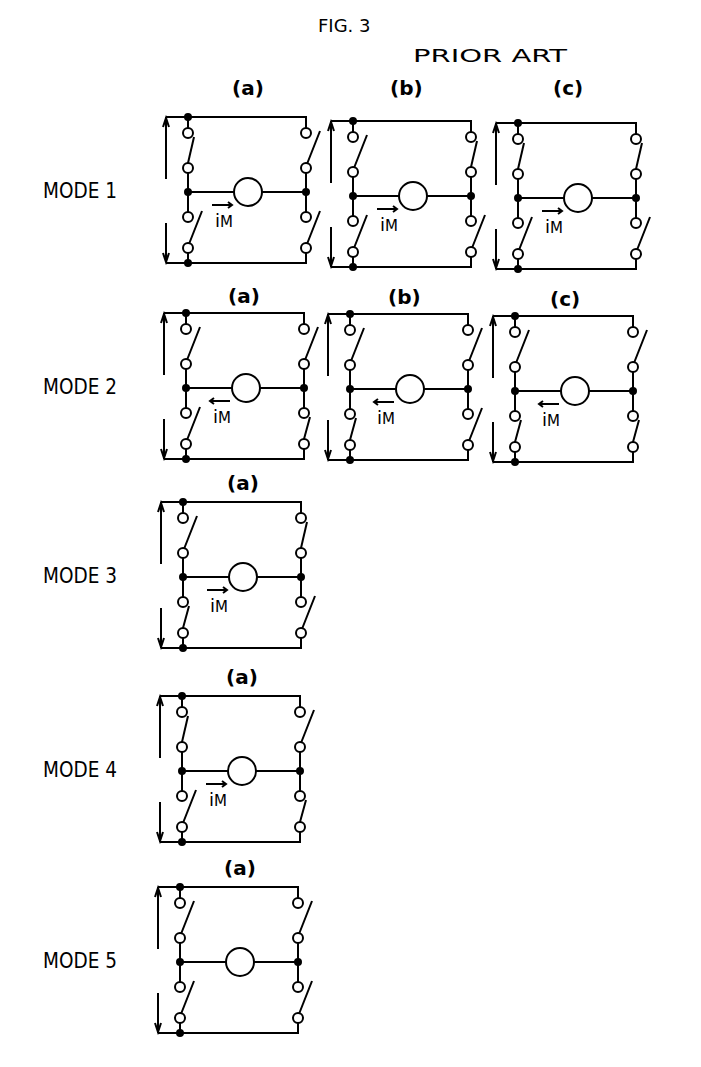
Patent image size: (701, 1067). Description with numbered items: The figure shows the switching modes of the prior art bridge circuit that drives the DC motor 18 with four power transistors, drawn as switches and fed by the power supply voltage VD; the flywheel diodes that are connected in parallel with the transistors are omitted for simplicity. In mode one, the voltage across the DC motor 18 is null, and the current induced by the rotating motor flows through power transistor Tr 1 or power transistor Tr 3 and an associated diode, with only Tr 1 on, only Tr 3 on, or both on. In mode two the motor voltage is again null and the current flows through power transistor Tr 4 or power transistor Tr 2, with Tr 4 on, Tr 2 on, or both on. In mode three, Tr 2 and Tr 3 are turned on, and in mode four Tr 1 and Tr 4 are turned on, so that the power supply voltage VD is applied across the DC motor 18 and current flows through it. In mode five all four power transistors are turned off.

The DC motor 18 is at (409, 551).
The power transistor Tr1 1 is at (366, 535).
The power transistor Tr2 2 is at (368, 618).
The power transistor Tr3 3 is at (455, 535).
The power transistor Tr4 4 is at (456, 617).
The power supply voltage VD is at (326, 575).